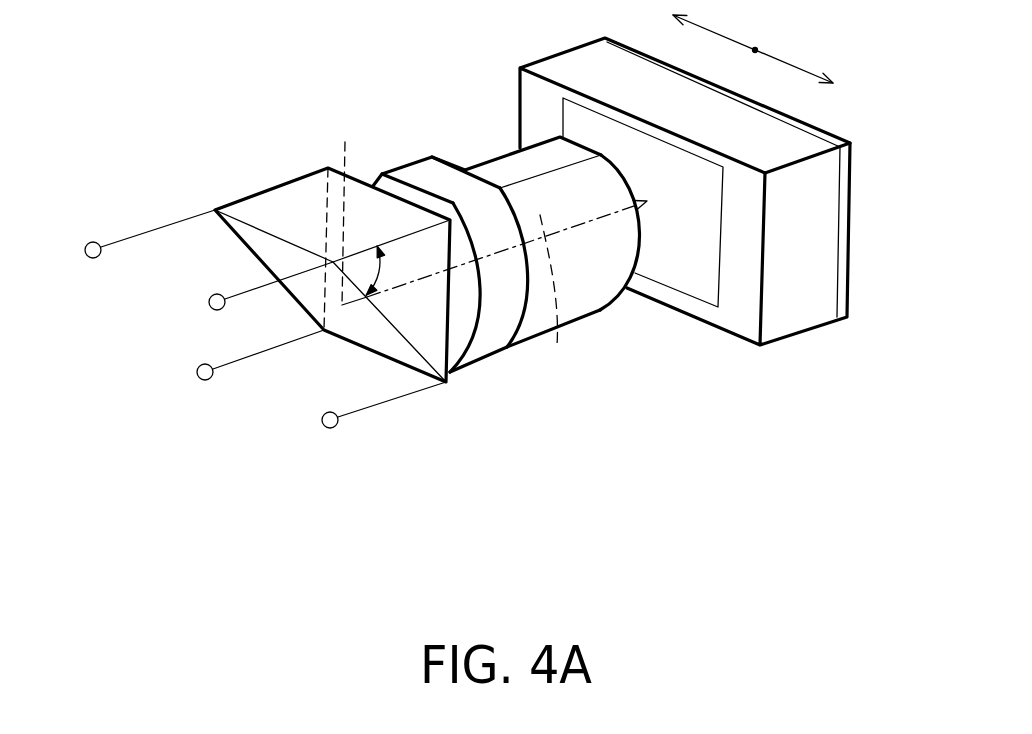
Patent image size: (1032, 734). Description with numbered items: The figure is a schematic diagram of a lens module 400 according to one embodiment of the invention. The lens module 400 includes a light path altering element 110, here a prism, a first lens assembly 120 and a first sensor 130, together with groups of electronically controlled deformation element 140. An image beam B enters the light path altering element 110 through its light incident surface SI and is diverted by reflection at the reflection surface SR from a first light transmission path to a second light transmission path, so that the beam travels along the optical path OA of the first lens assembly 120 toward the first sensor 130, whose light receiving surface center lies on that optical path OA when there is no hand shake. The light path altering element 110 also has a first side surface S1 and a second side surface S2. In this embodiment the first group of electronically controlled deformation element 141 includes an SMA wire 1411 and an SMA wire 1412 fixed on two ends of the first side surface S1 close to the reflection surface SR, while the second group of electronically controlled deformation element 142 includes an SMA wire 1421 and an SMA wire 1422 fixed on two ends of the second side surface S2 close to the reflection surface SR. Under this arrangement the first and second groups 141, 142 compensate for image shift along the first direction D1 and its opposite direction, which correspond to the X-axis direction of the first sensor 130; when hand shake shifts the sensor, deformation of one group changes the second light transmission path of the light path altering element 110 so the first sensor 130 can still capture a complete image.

The light path altering element 110 is at (433, 350).
The first lens assembly 120 is at (592, 293).
The first sensor 130 is at (800, 305).
The electronically controlled deformation element 140 is at (257, 386).
The first group of electronically controlled deformation element 141 is at (196, 386).
The second group of electronically controlled deformation element 142 is at (327, 412).
The SMA wire 1411 is at (127, 240).
The SMA wire 1412 is at (233, 363).
The SMA wire 1421 is at (263, 287).
The SMA wire 1422 is at (384, 441).
The lens module 400 is at (851, 517).
The image beam B is at (345, 157).
The optical path OA is at (494, 295).
The reflection surface SR is at (260, 247).
The first side surface S1 is at (292, 215).
The light incident surface SI is at (397, 215).
The second side surface S2 is at (430, 305).
The first direction D1 is at (751, 57).